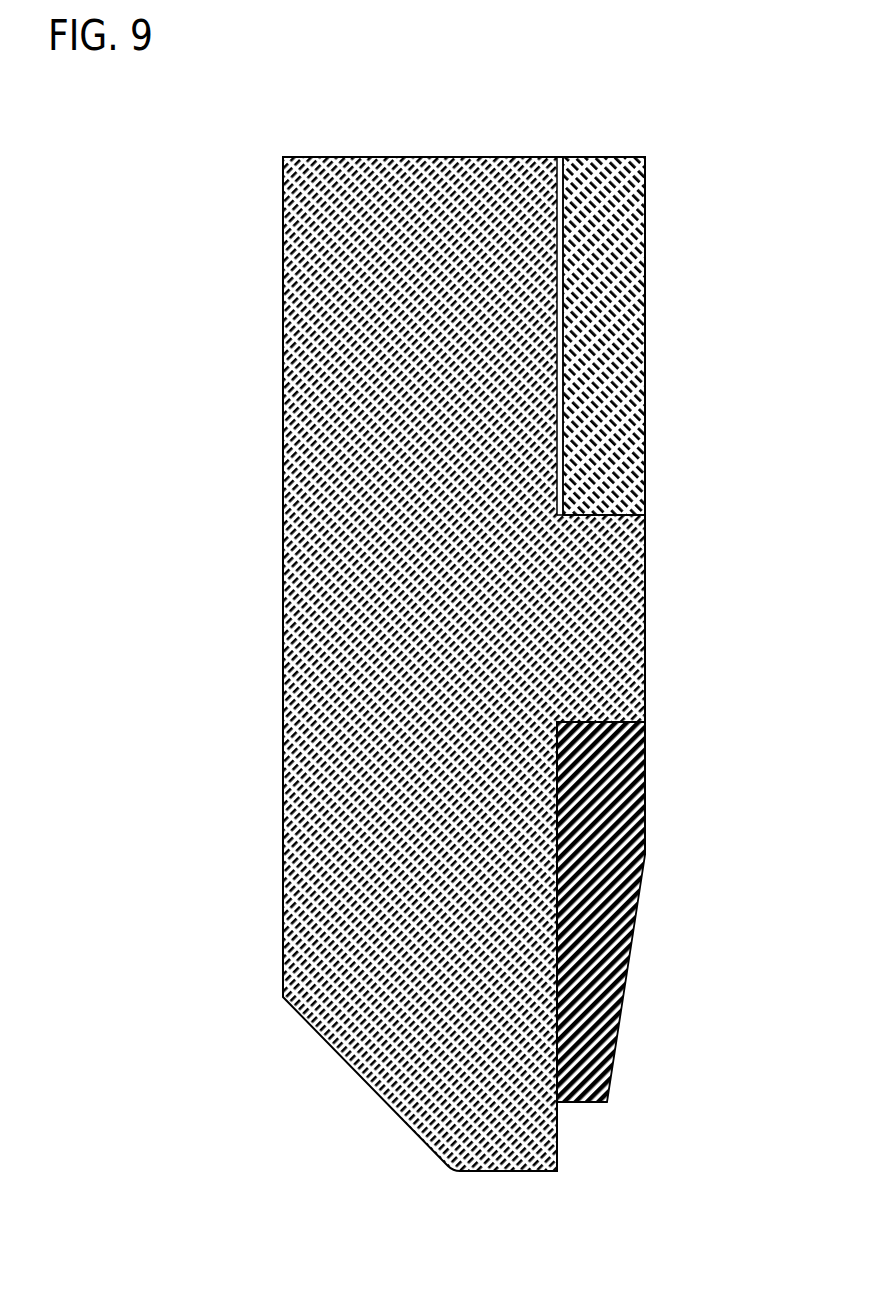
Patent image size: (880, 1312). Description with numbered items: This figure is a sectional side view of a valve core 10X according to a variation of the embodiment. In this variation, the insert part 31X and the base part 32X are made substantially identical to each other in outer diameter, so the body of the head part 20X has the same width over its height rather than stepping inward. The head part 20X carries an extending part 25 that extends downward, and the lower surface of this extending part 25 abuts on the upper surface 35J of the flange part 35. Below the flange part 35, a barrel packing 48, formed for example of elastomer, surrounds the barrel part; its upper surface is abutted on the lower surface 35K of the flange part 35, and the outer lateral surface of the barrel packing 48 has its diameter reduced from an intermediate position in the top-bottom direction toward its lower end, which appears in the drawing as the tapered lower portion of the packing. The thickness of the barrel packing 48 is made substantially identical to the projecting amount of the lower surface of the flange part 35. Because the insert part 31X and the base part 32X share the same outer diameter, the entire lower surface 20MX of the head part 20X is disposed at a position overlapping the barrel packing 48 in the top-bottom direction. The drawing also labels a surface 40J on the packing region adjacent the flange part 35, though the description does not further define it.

The valve core 10X is at (668, 114).
The head part 20X is at (605, 250).
The extending part 25 is at (600, 314).
The insert part 31X is at (305, 400).
The base part 32X is at (302, 812).
The flange part 35 is at (612, 620).
The upper surface of the flange part 35J is at (612, 500).
The lower surface of the head part 20MX is at (593, 520).
The lower surface of the flange part 35K is at (573, 720).
The nozzle plate side surface 40J is at (642, 778).
The barrel packing 48 is at (612, 923).